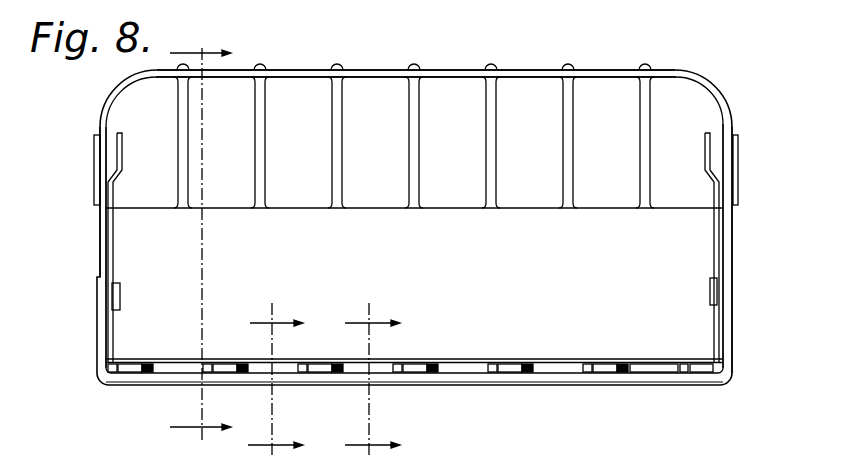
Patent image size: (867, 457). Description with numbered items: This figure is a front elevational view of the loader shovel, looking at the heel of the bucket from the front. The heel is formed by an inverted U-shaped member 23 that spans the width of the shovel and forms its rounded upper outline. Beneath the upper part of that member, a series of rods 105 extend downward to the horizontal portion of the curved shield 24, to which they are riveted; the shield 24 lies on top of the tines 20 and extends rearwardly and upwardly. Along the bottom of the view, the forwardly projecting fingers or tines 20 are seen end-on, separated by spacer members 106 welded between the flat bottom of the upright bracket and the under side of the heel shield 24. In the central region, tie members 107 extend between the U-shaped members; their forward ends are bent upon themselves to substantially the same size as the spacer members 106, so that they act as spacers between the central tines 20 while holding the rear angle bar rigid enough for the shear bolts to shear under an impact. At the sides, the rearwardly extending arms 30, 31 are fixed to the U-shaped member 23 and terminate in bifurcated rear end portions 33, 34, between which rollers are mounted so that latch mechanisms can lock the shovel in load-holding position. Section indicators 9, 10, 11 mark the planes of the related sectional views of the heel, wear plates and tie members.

The section line 9- 9 is at (200, 240).
The section line 10- 10 is at (275, 380).
The section line 11- 11 is at (371, 380).
The fingers 20 is at (132, 376).
The inverted U-shaped member 23 is at (308, 70).
The curved shield 24 is at (697, 253).
The rearwardly extending arm 30 is at (112, 252).
The rearwardly extending arm 31 is at (722, 222).
The bifurcated rear end portion 33 is at (124, 158).
The bifurcated rear end portion 34 is at (707, 150).
The rods 105 is at (333, 153).
The spacer members 106 is at (173, 370).
The tie members 107 is at (452, 367).